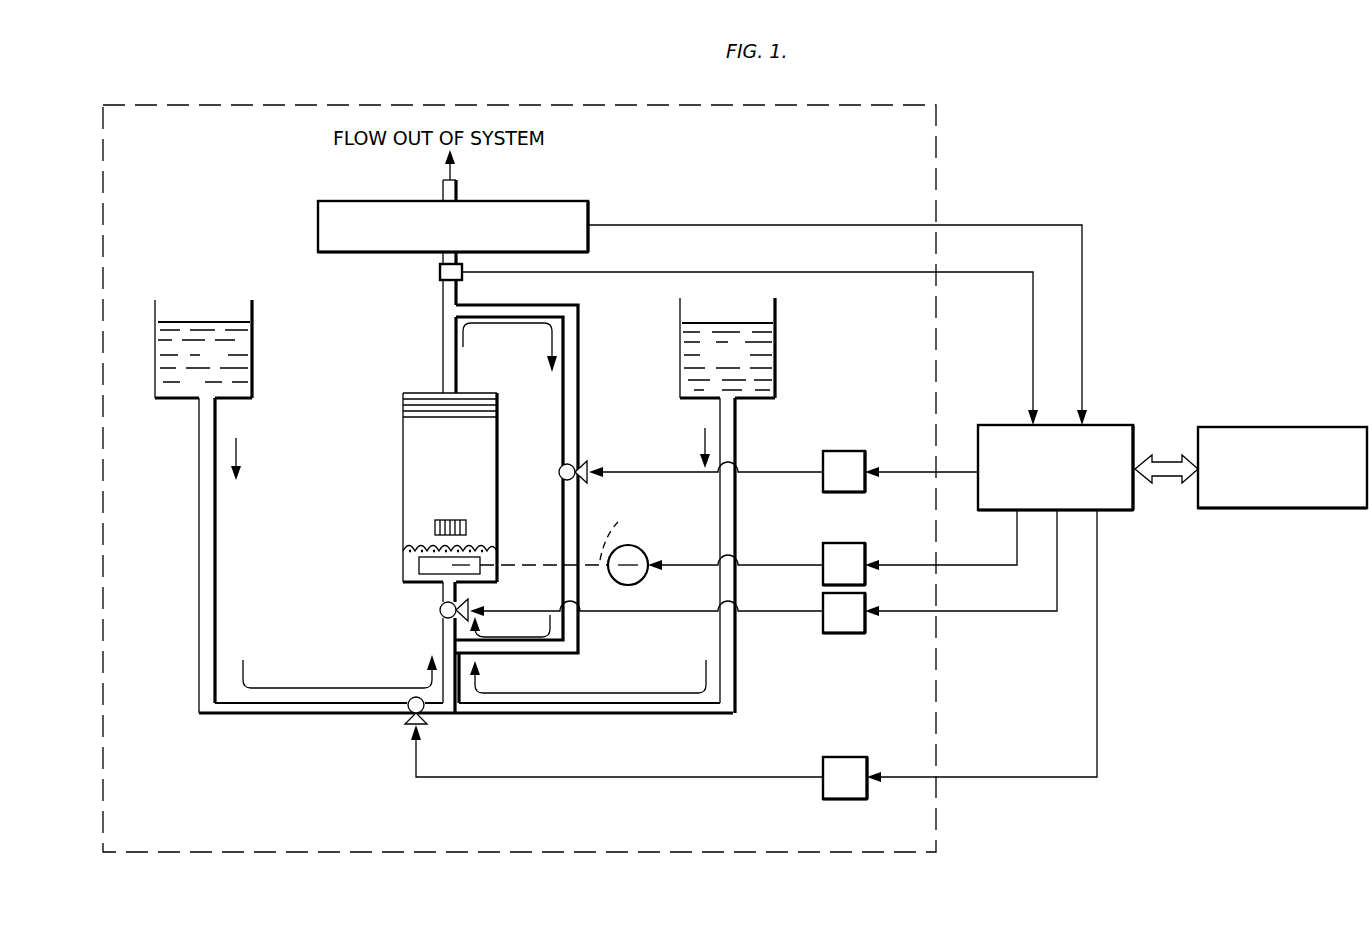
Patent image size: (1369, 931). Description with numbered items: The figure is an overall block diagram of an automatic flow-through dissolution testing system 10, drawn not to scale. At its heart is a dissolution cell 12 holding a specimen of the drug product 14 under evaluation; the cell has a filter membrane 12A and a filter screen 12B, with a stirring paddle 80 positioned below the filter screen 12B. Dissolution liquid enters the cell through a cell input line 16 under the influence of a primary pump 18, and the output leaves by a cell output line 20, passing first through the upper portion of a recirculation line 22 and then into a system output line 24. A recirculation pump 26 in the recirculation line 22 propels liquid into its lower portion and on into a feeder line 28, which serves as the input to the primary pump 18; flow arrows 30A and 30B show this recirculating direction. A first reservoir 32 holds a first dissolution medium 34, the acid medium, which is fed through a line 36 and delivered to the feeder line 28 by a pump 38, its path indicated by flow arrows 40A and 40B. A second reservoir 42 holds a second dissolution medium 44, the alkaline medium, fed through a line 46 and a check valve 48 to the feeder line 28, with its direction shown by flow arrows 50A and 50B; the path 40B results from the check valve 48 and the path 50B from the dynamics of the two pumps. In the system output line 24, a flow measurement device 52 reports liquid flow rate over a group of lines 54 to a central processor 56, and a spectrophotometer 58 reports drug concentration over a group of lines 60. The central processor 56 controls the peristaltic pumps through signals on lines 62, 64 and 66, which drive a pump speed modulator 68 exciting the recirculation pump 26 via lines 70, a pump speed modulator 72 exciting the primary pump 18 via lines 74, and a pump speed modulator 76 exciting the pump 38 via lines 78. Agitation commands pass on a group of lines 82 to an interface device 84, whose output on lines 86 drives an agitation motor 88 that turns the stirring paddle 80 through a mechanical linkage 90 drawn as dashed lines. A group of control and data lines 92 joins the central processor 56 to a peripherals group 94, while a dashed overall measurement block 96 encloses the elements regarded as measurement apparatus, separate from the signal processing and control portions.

The overall system 10 is at (1170, 182).
The dissolution cell 12 is at (380, 485).
The filter membrane 12A is at (403, 410).
The filter screen 12B is at (403, 548).
The drug product 14 is at (446, 520).
The cell input line 16 is at (443, 594).
The primary pump 18 is at (440, 614).
The cell output line 20 is at (443, 360).
The recirculation line 22 is at (580, 365).
The system output line 24 is at (443, 303).
The recirculation pump 26 is at (585, 456).
The feeder line 28 is at (455, 648).
The flow arrow 30A is at (510, 347).
The flow arrow 30B is at (510, 626).
The first reservoir 32 is at (155, 318).
The first dissolution medium 34 is at (217, 372).
The line 36 is at (199, 490).
The pump 38 is at (400, 727).
The flow arrow 40A is at (243, 447).
The flow arrow 40B is at (330, 661).
The second reservoir 42 is at (778, 348).
The second dissolution medium 44 is at (741, 372).
The line 46 is at (733, 454).
The check valve 48 is at (495, 708).
The flow arrow 50A is at (698, 436).
The flow arrow 50B is at (593, 665).
The flow measurement device 52 is at (440, 272).
The group of lines 54 is at (978, 272).
The central processor 56 is at (1105, 425).
The spectrophotometer 58 is at (562, 201).
The group of lines 60 is at (984, 225).
The group of lines 62 is at (958, 470).
The group of lines 64 is at (964, 614).
The group of lines 66 is at (1016, 777).
The pump speed modulator 68 is at (856, 483).
The lines 70 is at (765, 478).
The pump speed modulator 72 is at (856, 624).
The lines 74 is at (765, 614).
The pump speed modulator 76 is at (857, 789).
The lines 78 is at (770, 780).
The stirring paddle 80 is at (419, 565).
The group of lines 82 is at (955, 567).
The interface device 84 is at (856, 575).
The lines 86 is at (762, 566).
The agitation motor 88 is at (638, 550).
The mechanical linkage 90 is at (600, 534).
The group of control and data lines 92 is at (1166, 458).
The peripherals group 94 is at (1318, 427).
The overall measurement block 96 is at (920, 132).